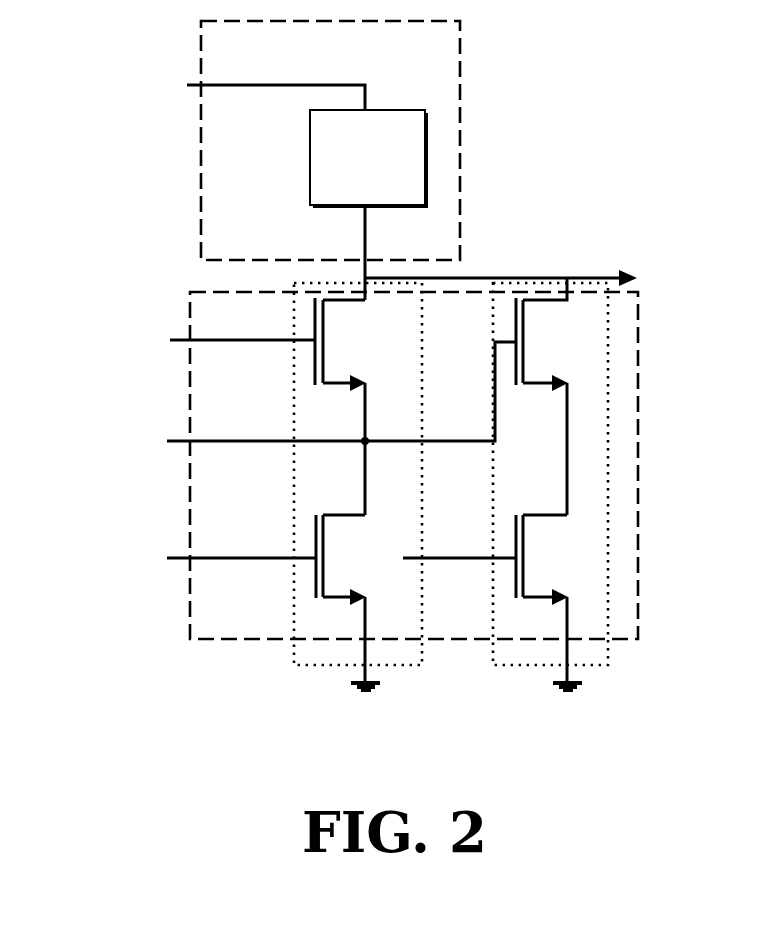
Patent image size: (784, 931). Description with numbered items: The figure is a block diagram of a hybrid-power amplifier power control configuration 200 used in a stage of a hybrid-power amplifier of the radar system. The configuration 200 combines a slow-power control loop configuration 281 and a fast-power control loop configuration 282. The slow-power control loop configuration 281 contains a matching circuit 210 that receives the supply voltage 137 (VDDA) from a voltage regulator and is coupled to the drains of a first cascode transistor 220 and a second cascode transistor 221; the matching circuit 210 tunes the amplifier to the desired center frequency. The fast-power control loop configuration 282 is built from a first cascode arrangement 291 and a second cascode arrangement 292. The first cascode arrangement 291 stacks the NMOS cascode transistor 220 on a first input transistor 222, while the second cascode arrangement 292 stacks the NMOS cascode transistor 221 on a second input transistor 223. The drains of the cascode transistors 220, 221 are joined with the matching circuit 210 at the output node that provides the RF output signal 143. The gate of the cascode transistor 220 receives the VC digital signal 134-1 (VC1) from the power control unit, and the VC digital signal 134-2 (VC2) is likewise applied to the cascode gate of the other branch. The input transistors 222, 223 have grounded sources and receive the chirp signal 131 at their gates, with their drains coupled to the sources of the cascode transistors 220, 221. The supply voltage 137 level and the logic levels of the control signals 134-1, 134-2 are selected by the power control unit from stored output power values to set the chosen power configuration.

The hybrid-power amplifier power control configuration 200 is at (702, 104).
The slow-power control loop configuration 281 is at (462, 98).
The supply voltage 137 is at (228, 84).
The matching circuit 210 is at (369, 159).
The RF output signal 143 is at (578, 278).
The fast-power control loop configuration 282 is at (640, 470).
The first cascode arrangement 291 is at (294, 665).
The second cascode arrangement 292 is at (510, 668).
The VC digital signal 134-1 is at (176, 340).
The VC digital signal 134-2 is at (181, 441).
The first cascode transistor 220 is at (326, 375).
The second cascode transistor 221 is at (526, 370).
The first input transistor 222 is at (326, 565).
The second input transistor 223 is at (528, 565).
The chirp signal 131 is at (206, 558).